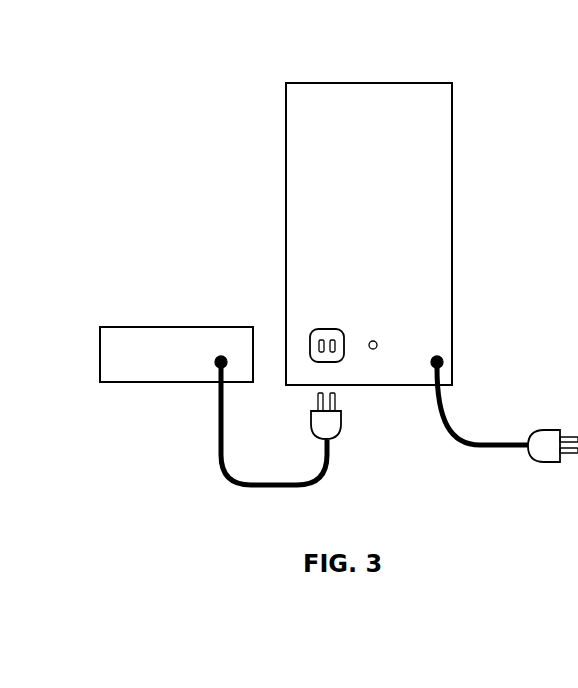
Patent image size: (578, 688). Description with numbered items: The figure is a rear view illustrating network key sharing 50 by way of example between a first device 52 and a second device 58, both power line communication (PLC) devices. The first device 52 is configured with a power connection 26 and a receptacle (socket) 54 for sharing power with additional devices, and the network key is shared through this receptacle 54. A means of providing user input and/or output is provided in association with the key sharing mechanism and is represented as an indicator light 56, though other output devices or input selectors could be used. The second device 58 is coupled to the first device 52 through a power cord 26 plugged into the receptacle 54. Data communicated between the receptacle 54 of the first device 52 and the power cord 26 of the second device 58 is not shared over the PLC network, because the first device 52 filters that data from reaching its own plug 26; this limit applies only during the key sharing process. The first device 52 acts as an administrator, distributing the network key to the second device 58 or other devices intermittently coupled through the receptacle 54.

The network key sharing 50 is at (163, 66).
The first device 52 is at (452, 150).
The receptacle (socket) 54 is at (327, 329).
The indicator light 56 is at (374, 340).
The second device 58 is at (157, 326).
The power connection 26 is at (342, 430).